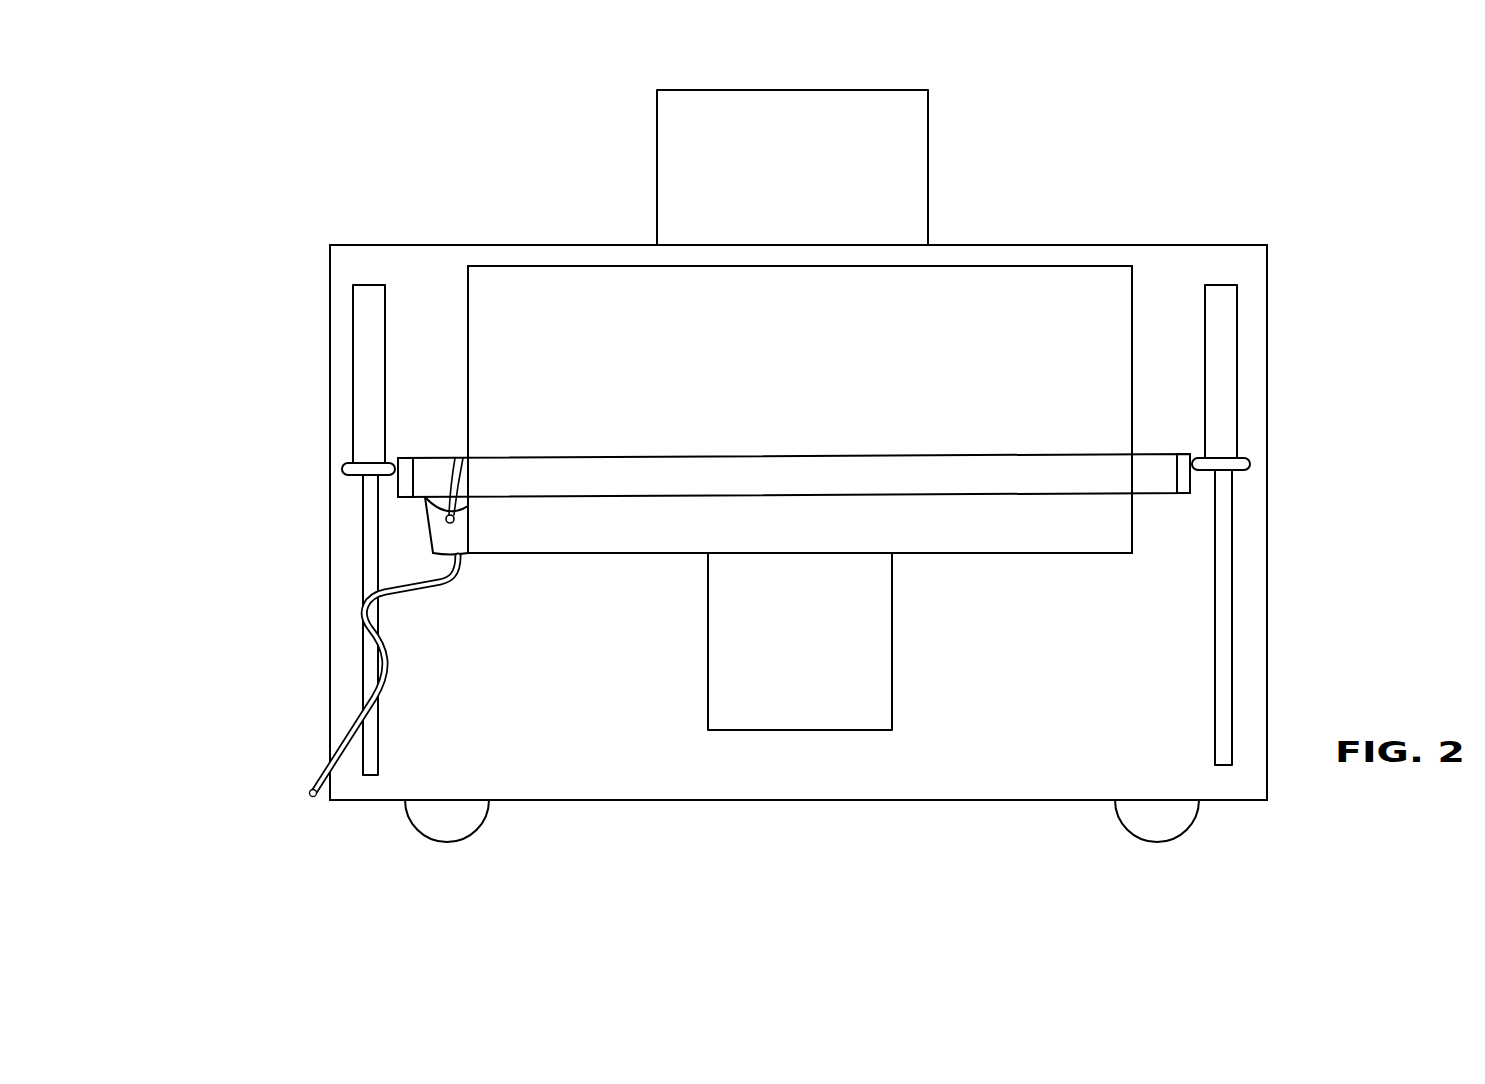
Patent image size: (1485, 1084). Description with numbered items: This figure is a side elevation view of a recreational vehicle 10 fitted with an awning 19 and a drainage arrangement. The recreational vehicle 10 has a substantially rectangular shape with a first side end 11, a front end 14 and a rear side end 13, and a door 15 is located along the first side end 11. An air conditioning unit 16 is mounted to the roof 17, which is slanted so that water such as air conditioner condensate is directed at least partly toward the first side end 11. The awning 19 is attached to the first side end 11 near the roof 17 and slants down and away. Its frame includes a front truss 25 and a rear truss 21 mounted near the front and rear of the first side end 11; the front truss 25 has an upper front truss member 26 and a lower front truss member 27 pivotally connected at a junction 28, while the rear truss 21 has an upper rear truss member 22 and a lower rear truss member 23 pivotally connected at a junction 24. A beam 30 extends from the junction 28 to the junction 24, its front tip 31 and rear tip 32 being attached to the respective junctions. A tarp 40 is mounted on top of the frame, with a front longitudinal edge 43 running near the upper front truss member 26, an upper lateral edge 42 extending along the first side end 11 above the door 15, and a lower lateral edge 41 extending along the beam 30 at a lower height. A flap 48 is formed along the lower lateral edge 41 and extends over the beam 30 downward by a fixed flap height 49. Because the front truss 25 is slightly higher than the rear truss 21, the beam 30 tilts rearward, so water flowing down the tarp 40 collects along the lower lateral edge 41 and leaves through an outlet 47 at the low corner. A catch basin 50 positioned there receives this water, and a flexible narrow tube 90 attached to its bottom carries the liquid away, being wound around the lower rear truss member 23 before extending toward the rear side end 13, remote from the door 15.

The recreational vehicle 10 is at (243, 714).
The first side end 11 is at (572, 760).
The rear side end 13 is at (330, 556).
The front end 14 is at (1268, 640).
The door 15 is at (815, 645).
The air conditioning unit 16 is at (791, 189).
The roof 17 is at (420, 241).
The awning 19 is at (1138, 560).
The rear truss 21 is at (349, 287).
The upper rear truss member 22 is at (353, 340).
The lower rear truss member 23 is at (363, 642).
The junction 24 is at (342, 469).
The front truss 25 is at (1240, 283).
The upper front truss member 26 is at (1228, 349).
The lower front truss member 27 is at (1222, 548).
The junction 28 is at (1250, 465).
The beam 30 is at (1160, 457).
The front tip 31 is at (1183, 494).
The rear tip 32 is at (406, 458).
The tarp 40 is at (757, 386).
The lower lateral edge 41 is at (622, 448).
The upper lateral edge 42 is at (752, 267).
The front longitudinal edge 43 is at (1132, 364).
The outlet 47 is at (466, 458).
The flap 48 is at (1062, 554).
The flap height 49 is at (958, 509).
The catch basin 50 is at (428, 516).
The flexible narrow tube 90 is at (421, 592).